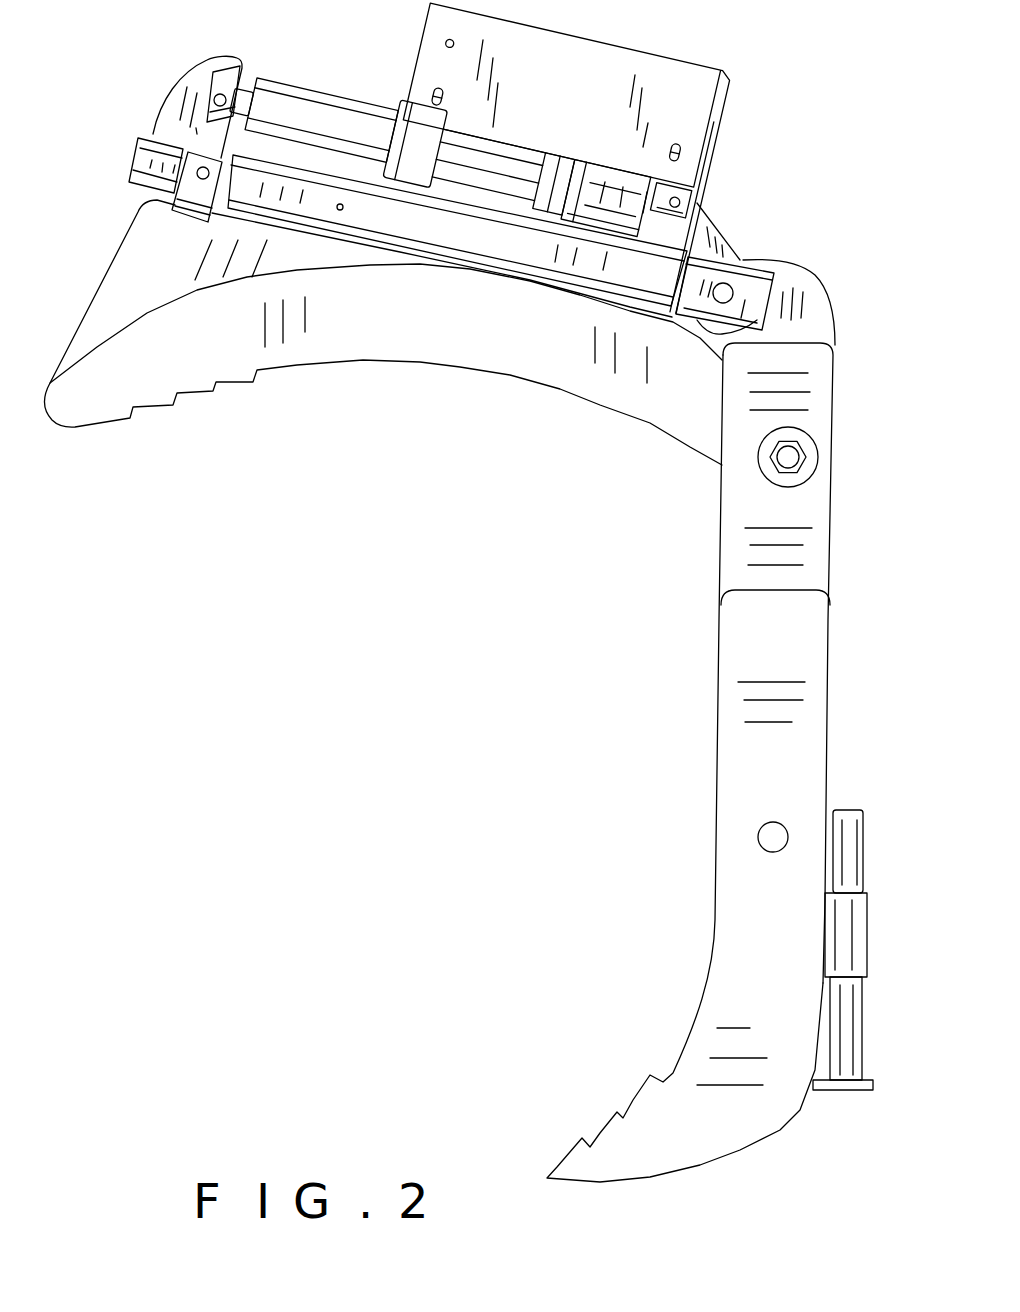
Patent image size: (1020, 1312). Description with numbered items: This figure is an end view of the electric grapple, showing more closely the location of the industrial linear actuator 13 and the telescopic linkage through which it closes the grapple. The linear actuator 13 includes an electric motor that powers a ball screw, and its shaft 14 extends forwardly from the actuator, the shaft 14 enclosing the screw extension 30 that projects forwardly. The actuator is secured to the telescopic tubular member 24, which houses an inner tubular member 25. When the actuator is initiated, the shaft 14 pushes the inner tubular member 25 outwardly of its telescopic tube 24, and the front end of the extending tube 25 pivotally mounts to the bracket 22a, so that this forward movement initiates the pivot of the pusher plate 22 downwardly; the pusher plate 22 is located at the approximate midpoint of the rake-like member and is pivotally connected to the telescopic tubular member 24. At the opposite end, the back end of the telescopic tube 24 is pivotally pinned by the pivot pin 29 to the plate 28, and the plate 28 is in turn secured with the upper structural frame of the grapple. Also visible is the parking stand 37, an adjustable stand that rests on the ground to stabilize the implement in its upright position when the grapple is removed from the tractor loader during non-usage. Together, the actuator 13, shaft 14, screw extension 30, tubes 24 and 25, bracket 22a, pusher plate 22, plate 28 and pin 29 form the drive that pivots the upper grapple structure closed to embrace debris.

The industrial linear actuator 13 is at (580, 107).
The shaft of the linear actuator 14 is at (302, 118).
The pusher plate 22 is at (175, 278).
The bracket 22a is at (187, 190).
The telescopic tubular member 24 is at (510, 247).
The inner tubular member 25 is at (133, 162).
The plate 28 is at (807, 367).
The pivot pin 29 is at (723, 290).
The screw extension 30 is at (248, 85).
The parking stand 37 is at (863, 933).